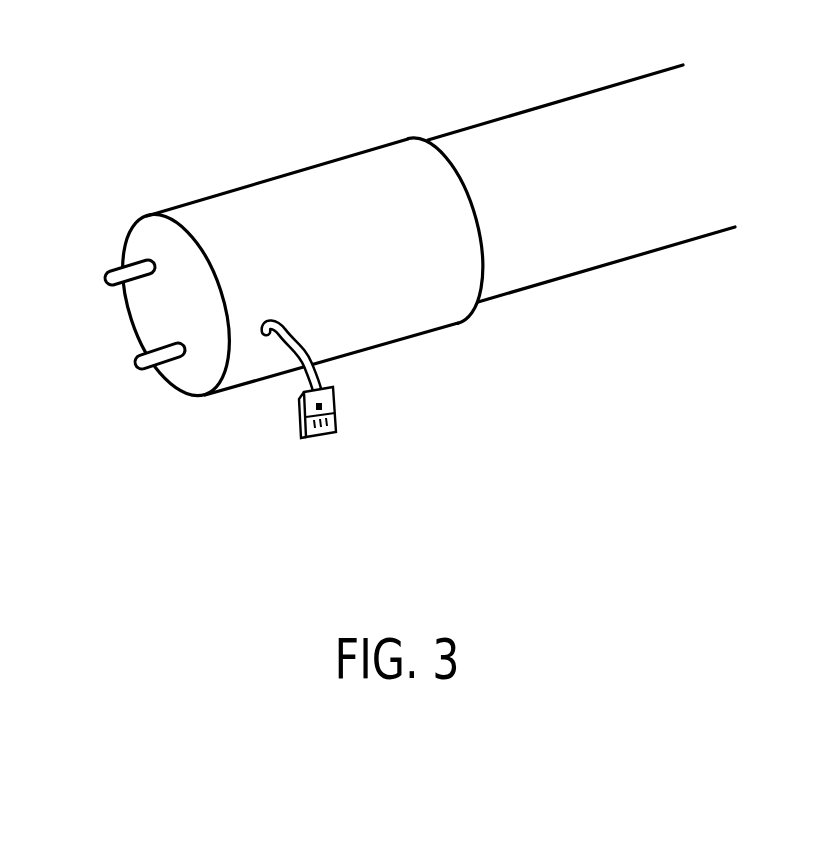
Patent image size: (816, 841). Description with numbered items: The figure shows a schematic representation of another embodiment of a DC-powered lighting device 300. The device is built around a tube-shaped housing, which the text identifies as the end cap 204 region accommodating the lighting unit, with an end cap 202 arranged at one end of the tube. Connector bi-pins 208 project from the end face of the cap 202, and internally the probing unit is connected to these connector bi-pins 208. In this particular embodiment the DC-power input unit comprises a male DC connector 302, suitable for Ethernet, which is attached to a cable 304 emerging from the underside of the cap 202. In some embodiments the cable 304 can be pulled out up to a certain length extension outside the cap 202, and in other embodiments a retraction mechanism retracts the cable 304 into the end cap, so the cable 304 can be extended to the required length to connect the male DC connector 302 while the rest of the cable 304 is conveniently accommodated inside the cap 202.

The DC-powered lighting device 300 is at (306, 99).
The end cap 202 is at (395, 305).
The end cap 204 is at (555, 242).
The connector bi-pins 208 is at (110, 284).
The male DC connector 302 is at (325, 435).
The cable 304 is at (273, 354).